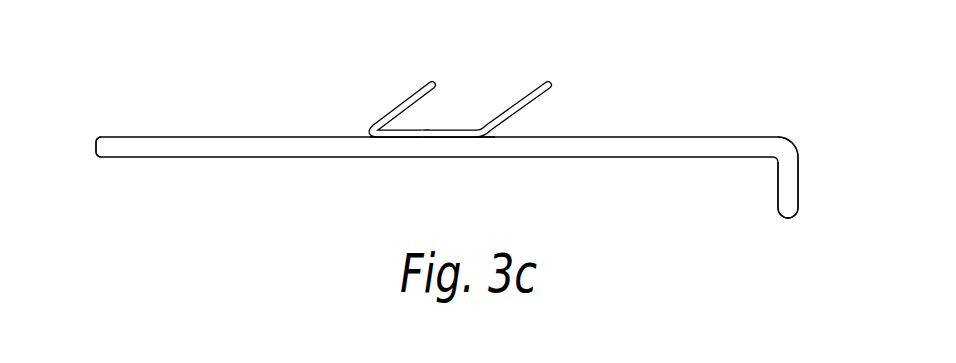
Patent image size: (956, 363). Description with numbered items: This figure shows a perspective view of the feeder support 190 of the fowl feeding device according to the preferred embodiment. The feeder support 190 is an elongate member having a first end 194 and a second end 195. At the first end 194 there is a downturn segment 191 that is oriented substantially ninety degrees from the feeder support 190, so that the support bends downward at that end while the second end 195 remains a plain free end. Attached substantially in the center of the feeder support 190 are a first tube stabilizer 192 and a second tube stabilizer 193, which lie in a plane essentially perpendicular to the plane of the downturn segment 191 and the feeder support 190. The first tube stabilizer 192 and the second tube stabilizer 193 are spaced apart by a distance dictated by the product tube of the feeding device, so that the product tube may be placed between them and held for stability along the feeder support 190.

The feeder support 190 is at (592, 123).
The downturn segment 191 is at (778, 187).
The first tube stabilizer 192 is at (511, 100).
The second tube stabilizer 193 is at (400, 100).
The first end 194 is at (717, 137).
The second end 195 is at (107, 137).